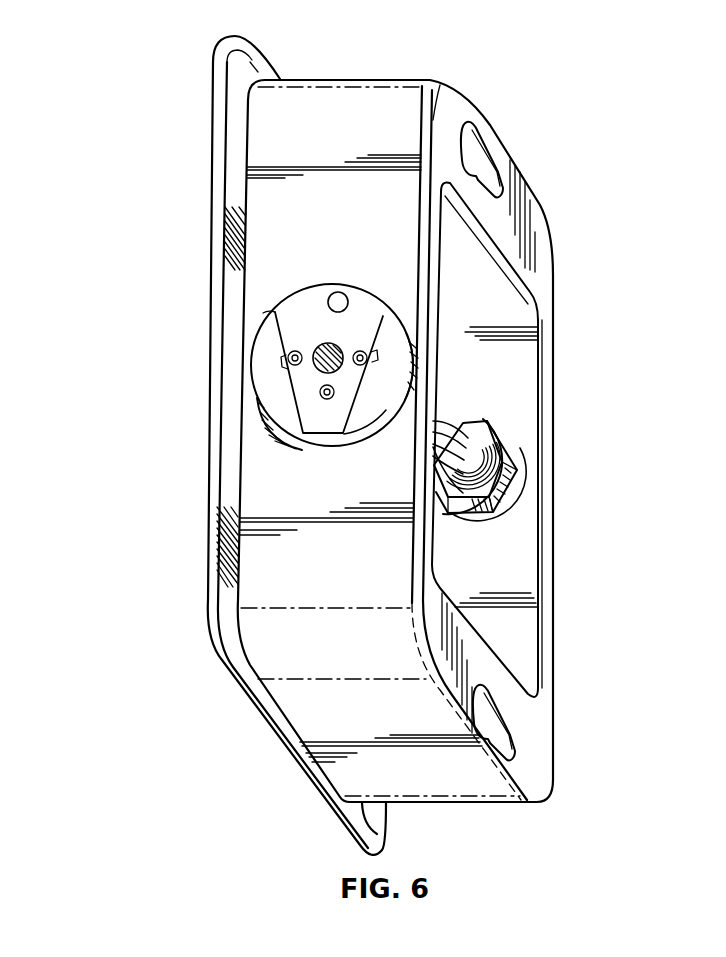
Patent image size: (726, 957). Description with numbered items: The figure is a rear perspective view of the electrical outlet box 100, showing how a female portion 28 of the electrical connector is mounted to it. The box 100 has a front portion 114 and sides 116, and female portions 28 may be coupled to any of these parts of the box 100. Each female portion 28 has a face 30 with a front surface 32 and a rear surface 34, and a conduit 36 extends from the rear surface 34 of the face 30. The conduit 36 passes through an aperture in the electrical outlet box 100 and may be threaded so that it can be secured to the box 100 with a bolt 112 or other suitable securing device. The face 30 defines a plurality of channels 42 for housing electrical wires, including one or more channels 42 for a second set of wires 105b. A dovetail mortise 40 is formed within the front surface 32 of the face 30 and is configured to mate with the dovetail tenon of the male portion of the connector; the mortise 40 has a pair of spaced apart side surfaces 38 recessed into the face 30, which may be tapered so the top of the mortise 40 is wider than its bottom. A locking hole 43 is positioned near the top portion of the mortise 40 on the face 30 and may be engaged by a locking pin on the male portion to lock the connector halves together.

The electrical outlet box 100 is at (265, 128).
The sides 116 is at (262, 143).
The front portion 114 is at (530, 771).
The face 30 is at (267, 373).
The front surface 32 is at (303, 307).
The dovetail mortise 40 is at (300, 318).
The side surfaces 38 is at (278, 327).
The locking hole 43 is at (342, 300).
The channels 42 is at (363, 350).
The female portion 28 is at (262, 437).
The rear surface 34 is at (518, 490).
The conduit 36 is at (482, 420).
The bolt 112 is at (506, 468).
The second set of wires 105b is at (327, 399).